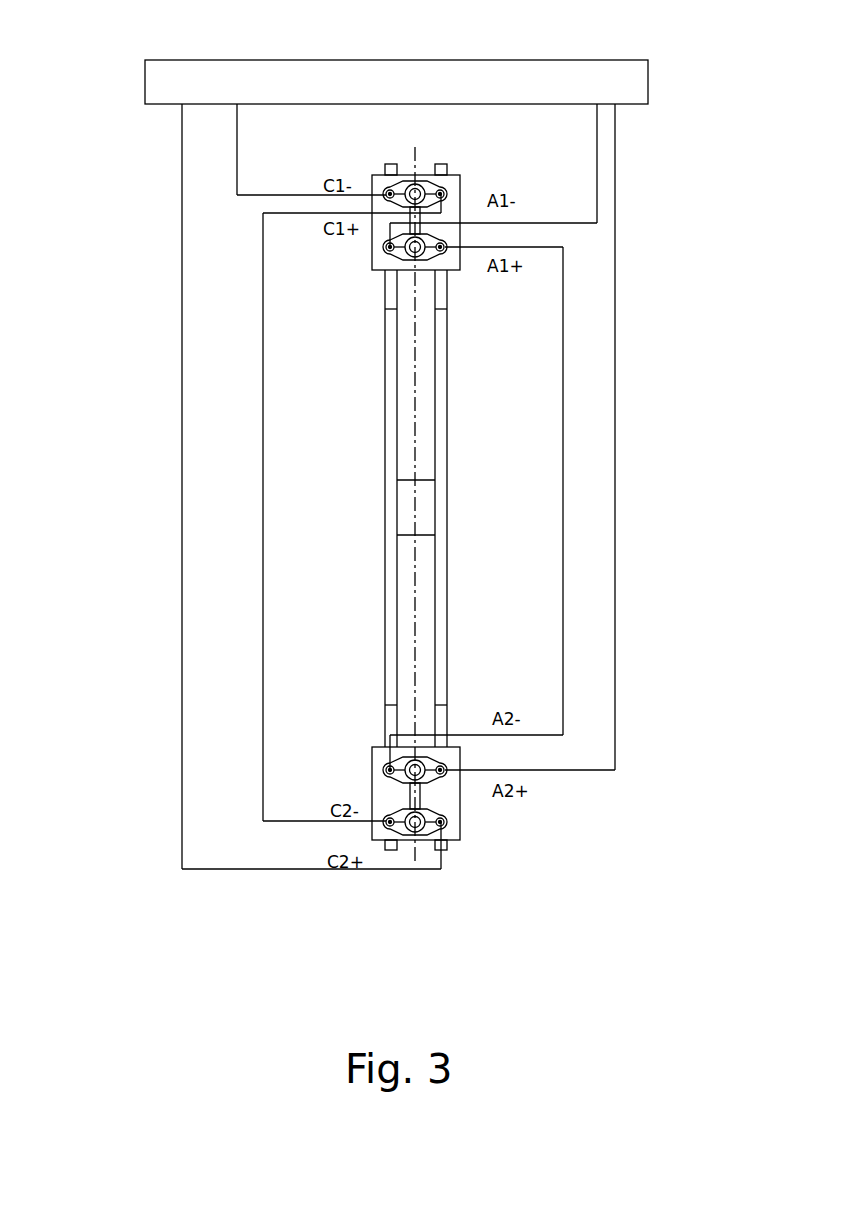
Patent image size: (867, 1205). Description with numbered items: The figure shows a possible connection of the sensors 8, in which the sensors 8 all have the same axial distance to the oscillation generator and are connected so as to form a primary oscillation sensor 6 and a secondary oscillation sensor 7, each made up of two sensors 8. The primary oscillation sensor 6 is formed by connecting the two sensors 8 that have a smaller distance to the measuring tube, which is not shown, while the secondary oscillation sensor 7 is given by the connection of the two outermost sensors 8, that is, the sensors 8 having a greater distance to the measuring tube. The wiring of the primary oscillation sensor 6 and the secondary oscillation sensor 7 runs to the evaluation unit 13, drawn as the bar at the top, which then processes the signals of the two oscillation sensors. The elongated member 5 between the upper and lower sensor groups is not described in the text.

The evaluation unit 13 is at (410, 95).
The sensors 8 is at (427, 238).
The secondary oscillation sensor 7 is at (263, 276).
The primary oscillation sensor 6 is at (597, 160).
The cooling rod / tube 5 is at (442, 381).